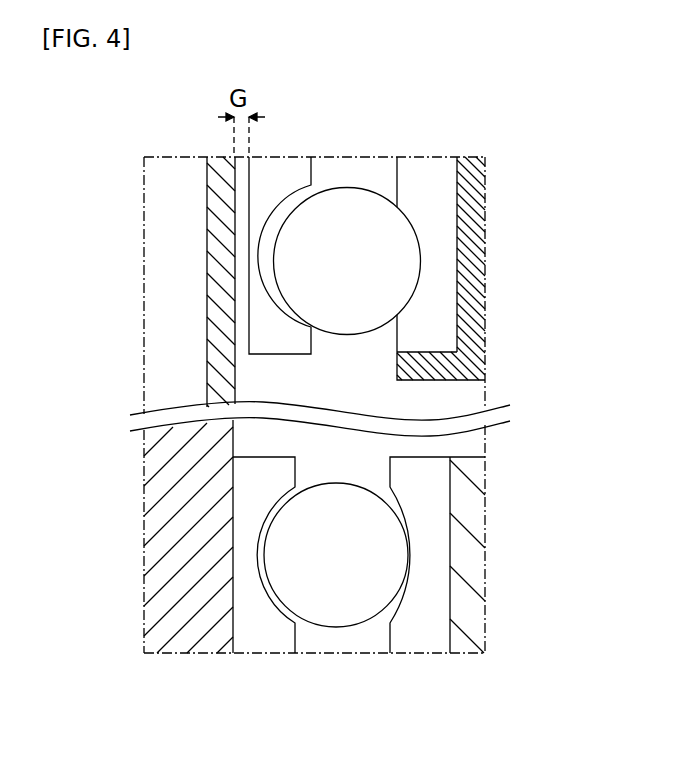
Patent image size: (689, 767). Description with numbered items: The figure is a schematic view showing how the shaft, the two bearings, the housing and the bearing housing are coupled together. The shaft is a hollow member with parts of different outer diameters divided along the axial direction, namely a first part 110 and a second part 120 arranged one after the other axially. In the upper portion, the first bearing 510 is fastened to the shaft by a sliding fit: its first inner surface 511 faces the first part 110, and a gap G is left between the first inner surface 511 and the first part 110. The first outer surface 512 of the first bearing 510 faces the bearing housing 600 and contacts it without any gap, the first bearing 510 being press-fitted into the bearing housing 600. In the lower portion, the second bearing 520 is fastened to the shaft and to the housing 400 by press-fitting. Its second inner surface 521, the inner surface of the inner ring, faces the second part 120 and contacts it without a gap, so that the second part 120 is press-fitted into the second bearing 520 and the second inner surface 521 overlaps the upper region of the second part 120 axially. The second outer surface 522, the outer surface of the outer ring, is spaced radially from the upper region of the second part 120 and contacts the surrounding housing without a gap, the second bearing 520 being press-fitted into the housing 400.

The first part 110 is at (220, 232).
The second part 120 is at (190, 503).
The housing 400 is at (468, 606).
The first bearing 510 is at (327, 238).
The first inner surface 511 is at (249, 312).
The first outer surface 512 is at (462, 285).
The second bearing 520 is at (313, 569).
The second inner surface 521 is at (233, 568).
The second outer surface 522 is at (452, 538).
The bearing housing 600 is at (465, 176).